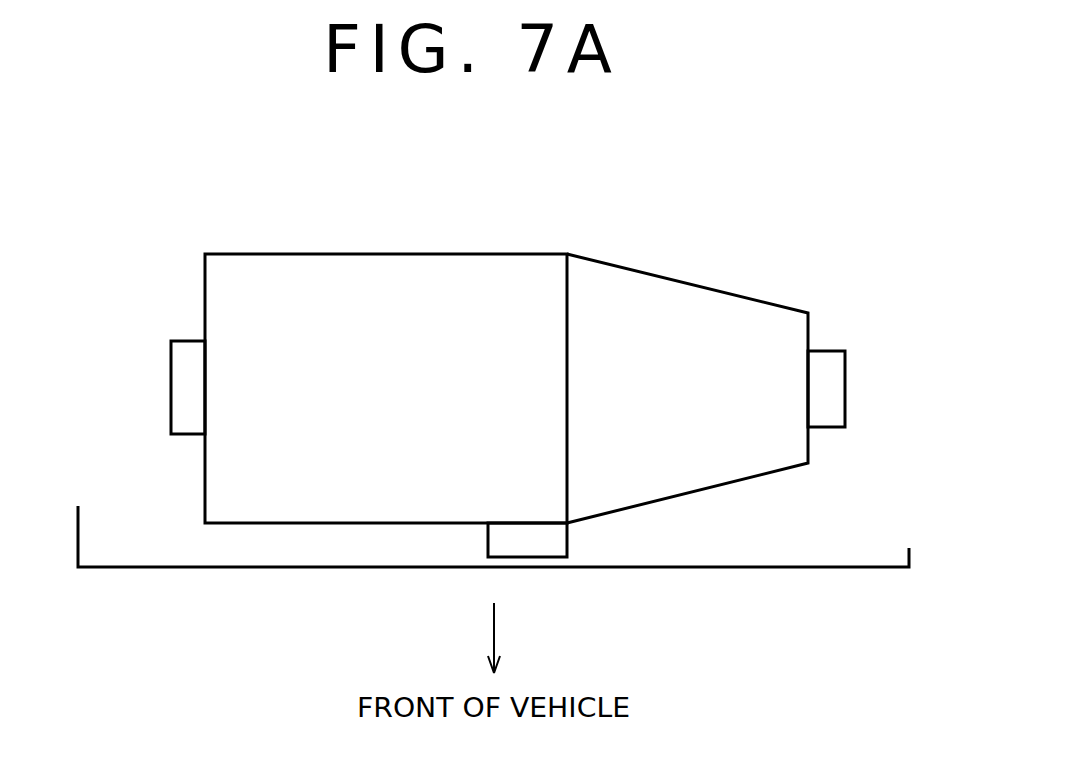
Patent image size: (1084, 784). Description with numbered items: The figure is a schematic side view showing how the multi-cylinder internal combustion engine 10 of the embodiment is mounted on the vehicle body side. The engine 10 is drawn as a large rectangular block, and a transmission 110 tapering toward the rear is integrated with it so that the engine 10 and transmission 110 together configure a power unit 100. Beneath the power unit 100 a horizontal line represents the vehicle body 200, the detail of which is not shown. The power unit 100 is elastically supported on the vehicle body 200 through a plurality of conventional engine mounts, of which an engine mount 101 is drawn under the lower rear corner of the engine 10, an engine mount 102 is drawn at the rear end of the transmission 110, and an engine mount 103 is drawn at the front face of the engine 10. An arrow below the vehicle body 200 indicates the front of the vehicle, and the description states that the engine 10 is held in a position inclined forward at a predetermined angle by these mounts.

The multi-cylinder internal combustion engine 10 is at (388, 253).
The power unit 100 is at (572, 220).
The engine mount 101 is at (567, 545).
The engine mount 102 is at (846, 378).
The engine mount 103 is at (171, 368).
The transmission 110 is at (675, 280).
The vehicle body 200 is at (845, 568).